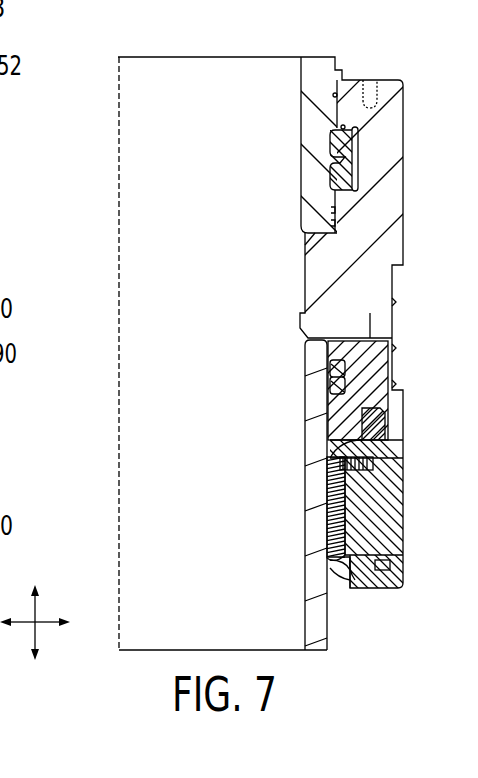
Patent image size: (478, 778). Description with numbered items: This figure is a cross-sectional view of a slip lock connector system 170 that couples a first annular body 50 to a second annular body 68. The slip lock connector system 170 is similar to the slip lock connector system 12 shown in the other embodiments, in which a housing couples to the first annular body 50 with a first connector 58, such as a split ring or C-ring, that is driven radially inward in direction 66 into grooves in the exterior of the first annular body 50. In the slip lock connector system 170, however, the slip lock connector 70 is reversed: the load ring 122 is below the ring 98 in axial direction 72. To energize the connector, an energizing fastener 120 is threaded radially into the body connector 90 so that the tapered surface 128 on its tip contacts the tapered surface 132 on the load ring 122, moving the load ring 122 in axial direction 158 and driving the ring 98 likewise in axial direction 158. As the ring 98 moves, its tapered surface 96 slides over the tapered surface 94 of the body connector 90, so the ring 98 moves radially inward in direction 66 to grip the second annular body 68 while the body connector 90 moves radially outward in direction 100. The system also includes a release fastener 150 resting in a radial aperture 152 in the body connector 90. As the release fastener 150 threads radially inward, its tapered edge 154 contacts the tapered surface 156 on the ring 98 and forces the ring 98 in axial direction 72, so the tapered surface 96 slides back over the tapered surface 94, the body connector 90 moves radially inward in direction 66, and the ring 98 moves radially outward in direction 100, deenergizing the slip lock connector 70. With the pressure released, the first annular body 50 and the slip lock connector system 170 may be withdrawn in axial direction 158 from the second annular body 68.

The slip lock connector system 12 is at (413, 84).
The first annular body 50 is at (318, 63).
The first connector 58 is at (352, 153).
The second annular body 68 is at (317, 632).
The slip lock connector 70 is at (397, 603).
The body connector 90 is at (387, 523).
The tapered surface 94 is at (348, 508).
The tapered surface 96 is at (328, 500).
The ring 98 is at (330, 518).
The energizing fastener 120 is at (367, 557).
The load ring 122 is at (335, 556).
The tapered surface 128 is at (352, 565).
The tapered surface 132 is at (342, 572).
The release fastener 150 is at (373, 471).
The radial aperture 152 is at (385, 448).
The tapered edge 154 is at (372, 423).
The tapered surface 156 is at (338, 452).
The slip lock connector system 170 is at (421, 574).
The radially inward direction 66 is at (18, 621).
The radially outward direction 100 is at (47, 622).
The axial direction 158 is at (38, 611).
The axial direction 72 is at (40, 634).